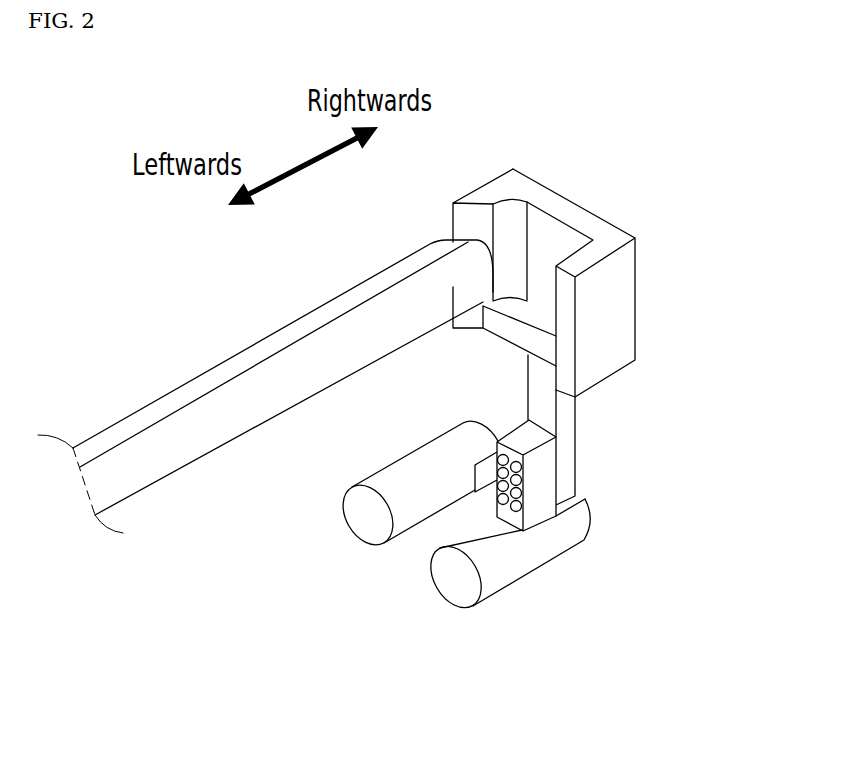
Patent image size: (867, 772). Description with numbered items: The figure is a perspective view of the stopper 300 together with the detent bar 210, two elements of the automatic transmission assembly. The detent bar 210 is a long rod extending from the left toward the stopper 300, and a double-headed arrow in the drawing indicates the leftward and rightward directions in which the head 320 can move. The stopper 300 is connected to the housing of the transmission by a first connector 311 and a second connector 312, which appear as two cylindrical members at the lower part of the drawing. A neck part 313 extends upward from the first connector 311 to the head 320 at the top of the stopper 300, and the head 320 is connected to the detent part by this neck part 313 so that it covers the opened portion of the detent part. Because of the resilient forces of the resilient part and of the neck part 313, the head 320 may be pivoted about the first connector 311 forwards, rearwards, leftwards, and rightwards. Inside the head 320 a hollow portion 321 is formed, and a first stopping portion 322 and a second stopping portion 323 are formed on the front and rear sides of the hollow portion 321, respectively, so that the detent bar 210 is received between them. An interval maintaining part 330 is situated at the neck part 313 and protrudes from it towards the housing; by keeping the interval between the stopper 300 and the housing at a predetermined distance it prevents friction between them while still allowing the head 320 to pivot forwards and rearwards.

The detent bar 210 is at (204, 410).
The stopper 300 is at (662, 160).
The first connector 311 is at (452, 588).
The second connector 312 is at (358, 520).
The neck part 313 is at (568, 439).
The head 320 is at (597, 105).
The hollow portion 321 is at (527, 259).
The first stopping portion 322 is at (480, 216).
The second stopping portion 323 is at (573, 258).
The interval maintaining part 330 is at (532, 488).